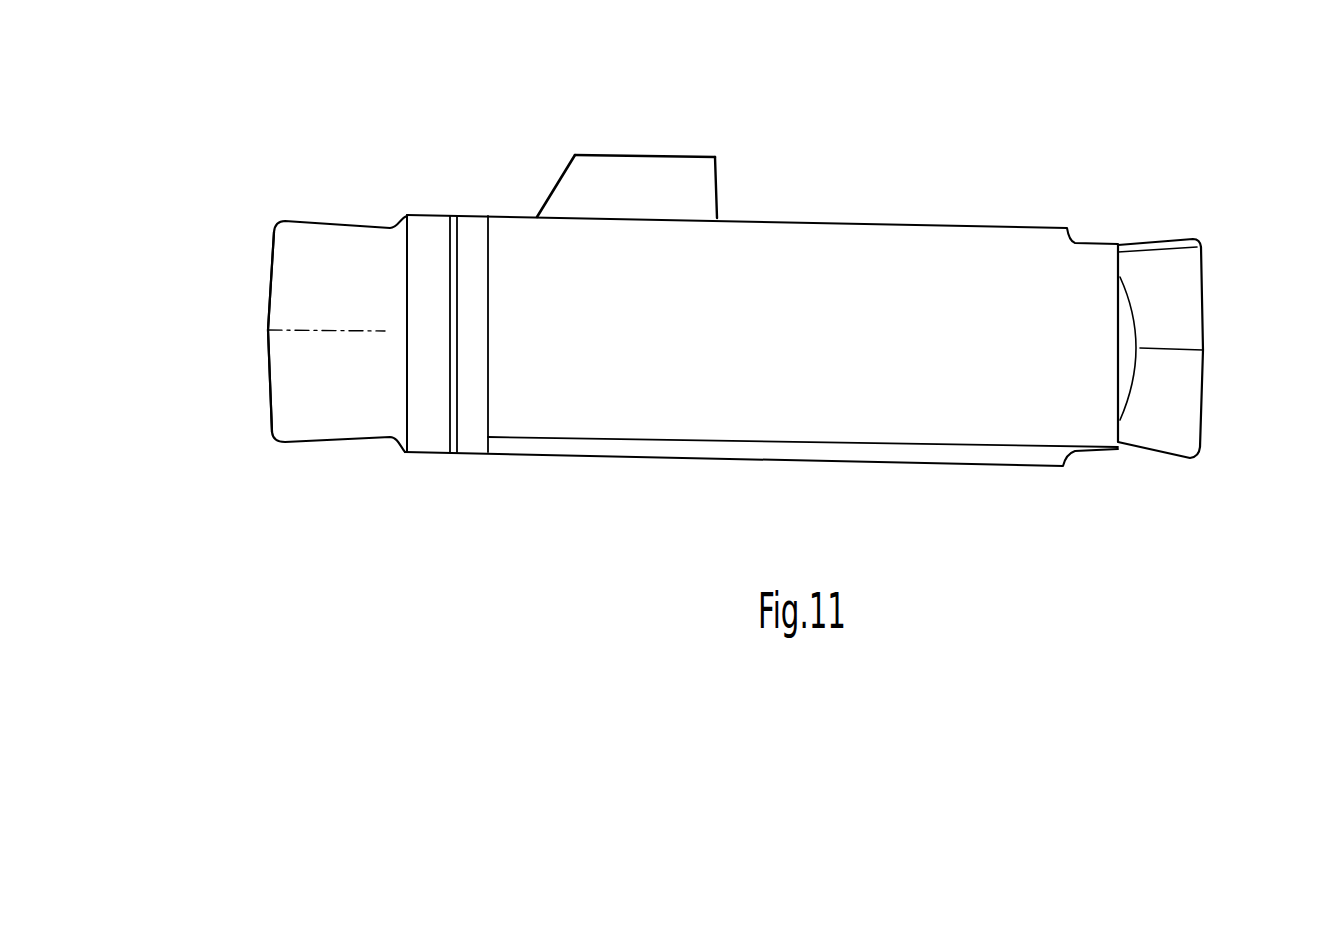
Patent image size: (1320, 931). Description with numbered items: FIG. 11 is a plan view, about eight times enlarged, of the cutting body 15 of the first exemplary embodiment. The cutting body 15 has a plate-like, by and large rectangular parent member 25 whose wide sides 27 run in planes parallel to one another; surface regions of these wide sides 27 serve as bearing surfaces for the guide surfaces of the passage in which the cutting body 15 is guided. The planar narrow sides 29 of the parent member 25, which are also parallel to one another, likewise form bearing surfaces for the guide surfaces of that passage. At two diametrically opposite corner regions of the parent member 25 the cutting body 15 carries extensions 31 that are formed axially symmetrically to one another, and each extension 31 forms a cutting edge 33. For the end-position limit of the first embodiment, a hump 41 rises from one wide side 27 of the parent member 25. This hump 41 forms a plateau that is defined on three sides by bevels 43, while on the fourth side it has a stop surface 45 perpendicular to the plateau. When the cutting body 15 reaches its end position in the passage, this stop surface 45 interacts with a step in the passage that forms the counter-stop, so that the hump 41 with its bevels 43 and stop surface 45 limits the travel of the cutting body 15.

The cutting body 15 is at (719, 353).
The parent member 25 is at (761, 351).
The wide sides 27 is at (852, 222).
The narrow sides 29 is at (945, 352).
The extensions 31 is at (343, 223).
The cutting edge 33 is at (272, 263).
The hump 41 is at (663, 123).
The bevels 43 is at (557, 187).
The stop surface 45 is at (717, 190).